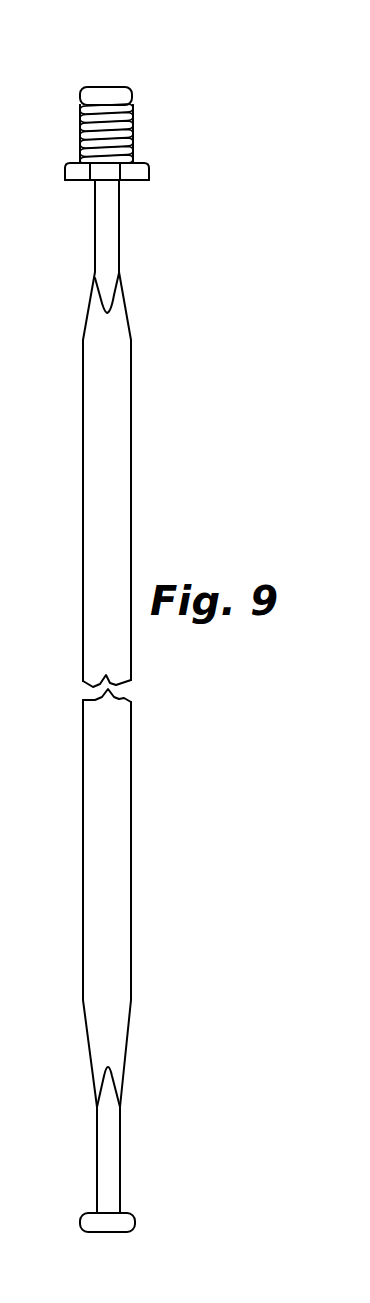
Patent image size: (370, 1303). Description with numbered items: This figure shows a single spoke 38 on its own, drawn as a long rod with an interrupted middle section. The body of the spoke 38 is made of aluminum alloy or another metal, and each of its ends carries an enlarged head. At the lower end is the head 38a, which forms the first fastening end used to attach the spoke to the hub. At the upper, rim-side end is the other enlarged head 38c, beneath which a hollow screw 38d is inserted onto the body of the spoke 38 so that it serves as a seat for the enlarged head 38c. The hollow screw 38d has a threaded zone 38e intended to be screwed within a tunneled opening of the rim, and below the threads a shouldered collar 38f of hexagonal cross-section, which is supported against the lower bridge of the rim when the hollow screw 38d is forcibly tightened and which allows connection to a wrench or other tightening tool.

The spoke 38 is at (120, 907).
The head 38a is at (123, 1220).
The enlarged head 38c is at (115, 95).
The hollow screw 38d is at (132, 138).
The threaded zone 38e is at (133, 108).
The shouldered collar 38f is at (141, 172).